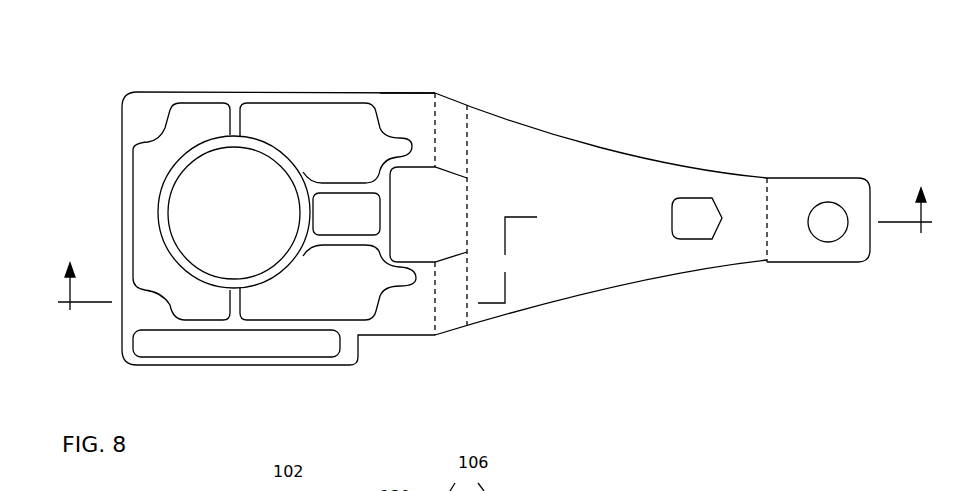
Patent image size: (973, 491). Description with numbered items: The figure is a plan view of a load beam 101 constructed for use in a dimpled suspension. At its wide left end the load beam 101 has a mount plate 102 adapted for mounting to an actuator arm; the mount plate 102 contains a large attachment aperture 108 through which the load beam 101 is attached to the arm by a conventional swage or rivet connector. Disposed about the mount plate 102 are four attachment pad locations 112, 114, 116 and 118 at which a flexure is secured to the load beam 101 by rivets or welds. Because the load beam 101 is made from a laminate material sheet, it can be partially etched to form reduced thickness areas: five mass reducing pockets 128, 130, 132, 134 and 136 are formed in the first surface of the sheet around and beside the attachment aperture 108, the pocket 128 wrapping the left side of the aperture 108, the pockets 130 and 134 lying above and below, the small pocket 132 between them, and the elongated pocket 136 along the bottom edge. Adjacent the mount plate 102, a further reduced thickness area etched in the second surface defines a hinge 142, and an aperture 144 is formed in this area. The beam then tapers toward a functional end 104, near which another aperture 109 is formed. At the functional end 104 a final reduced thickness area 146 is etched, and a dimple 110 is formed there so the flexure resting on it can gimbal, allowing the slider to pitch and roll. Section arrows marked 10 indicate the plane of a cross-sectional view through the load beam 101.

The load beam 101 is at (58, 64).
The mount plate 102 is at (297, 72).
The functional end 104 is at (790, 146).
The attachment aperture 108 is at (183, 173).
The aperture 109 is at (690, 228).
The dimple 110 is at (838, 240).
The attachment pad location 112 is at (138, 114).
The attachment pad location 114 is at (410, 112).
The attachment pad location 116 is at (138, 310).
The attachment pad location 118 is at (413, 318).
The mass reducing pocket 128 is at (148, 195).
The mass reducing pocket 130 is at (352, 120).
The mass reducing pocket 132 is at (346, 214).
The mass reducing pocket 134 is at (357, 297).
The mass reducing pocket 136 is at (230, 345).
The hinge 142 is at (448, 115).
The aperture 144 is at (428, 214).
The reduced thickness area 146 is at (802, 245).
The section line 10- 10 is at (497, 259).